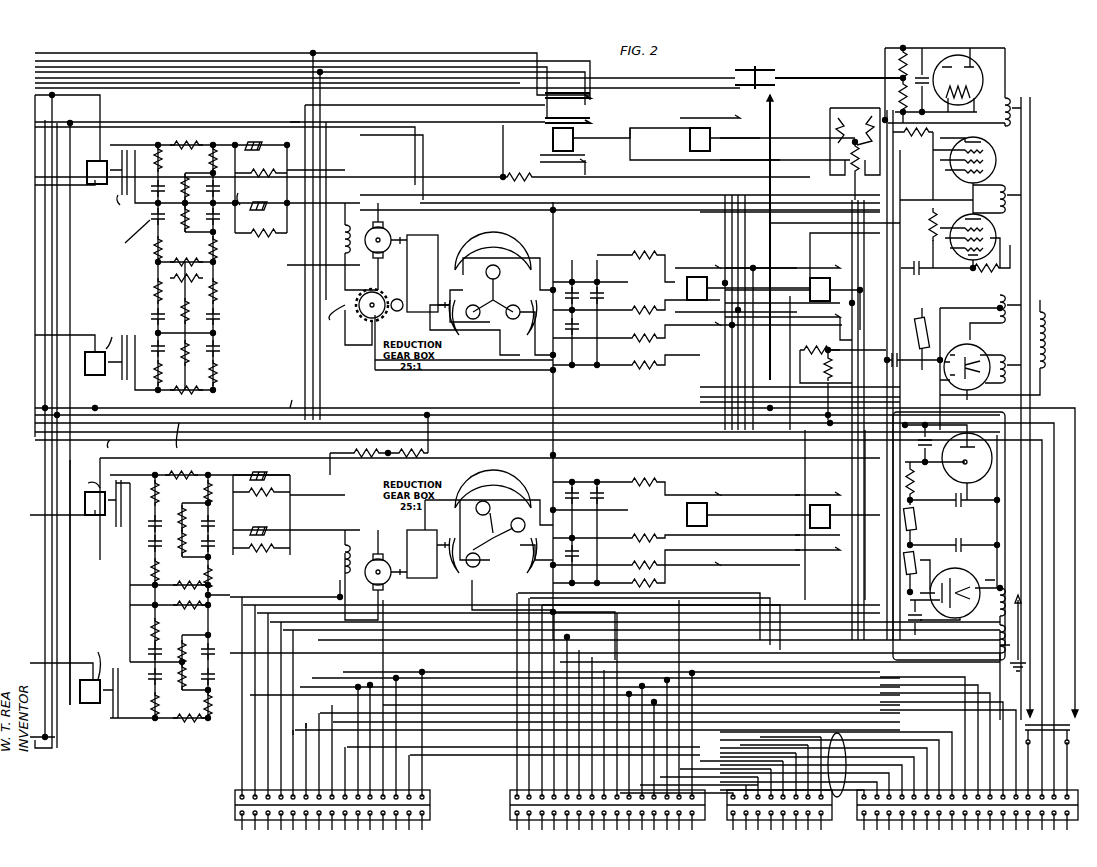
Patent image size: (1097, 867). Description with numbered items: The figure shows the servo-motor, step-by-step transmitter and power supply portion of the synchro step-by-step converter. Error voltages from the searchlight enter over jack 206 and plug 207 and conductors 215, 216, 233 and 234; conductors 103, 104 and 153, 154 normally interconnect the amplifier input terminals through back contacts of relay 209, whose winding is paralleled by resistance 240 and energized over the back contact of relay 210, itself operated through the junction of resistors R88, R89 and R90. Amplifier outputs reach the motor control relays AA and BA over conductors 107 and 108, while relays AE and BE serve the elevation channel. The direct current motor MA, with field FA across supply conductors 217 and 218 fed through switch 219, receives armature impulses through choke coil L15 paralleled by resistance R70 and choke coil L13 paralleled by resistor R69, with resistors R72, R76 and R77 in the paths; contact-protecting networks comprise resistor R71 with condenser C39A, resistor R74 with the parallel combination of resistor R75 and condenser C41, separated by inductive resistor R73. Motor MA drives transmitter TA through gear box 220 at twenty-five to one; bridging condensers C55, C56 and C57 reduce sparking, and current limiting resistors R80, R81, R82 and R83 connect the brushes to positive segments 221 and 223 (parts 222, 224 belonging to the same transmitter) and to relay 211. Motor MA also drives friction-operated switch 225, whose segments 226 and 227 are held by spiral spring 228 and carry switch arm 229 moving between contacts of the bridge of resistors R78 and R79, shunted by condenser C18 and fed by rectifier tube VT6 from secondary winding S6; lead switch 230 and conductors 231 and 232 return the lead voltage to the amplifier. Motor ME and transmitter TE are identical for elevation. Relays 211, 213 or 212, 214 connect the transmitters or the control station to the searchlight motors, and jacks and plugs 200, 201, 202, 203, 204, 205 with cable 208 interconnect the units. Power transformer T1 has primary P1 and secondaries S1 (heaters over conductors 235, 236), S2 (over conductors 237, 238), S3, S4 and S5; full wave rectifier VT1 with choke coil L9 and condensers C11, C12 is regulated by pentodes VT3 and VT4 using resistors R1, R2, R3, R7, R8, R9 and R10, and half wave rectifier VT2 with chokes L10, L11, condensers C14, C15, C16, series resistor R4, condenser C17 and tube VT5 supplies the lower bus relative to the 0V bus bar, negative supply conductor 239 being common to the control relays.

The conductor 103 is at (71, 53).
The conductor 104 is at (119, 58).
The conductor 154 is at (177, 65).
The conductor 153 is at (239, 70).
The conductor 107 is at (98, 205).
The conductor 108 is at (77, 334).
The jack 200 is at (724, 800).
The plug 201 is at (725, 792).
The jack 202 is at (862, 815).
The plug 203 is at (850, 795).
The plug 204 is at (238, 796).
The jack 205 is at (238, 814).
The jack 206 is at (512, 810).
The plug 207 is at (512, 796).
The cable 208 is at (834, 748).
The relay 209 is at (575, 140).
The relay 210 is at (690, 140).
The relay 211 is at (694, 277).
The relay 212 is at (822, 275).
The relay 213 is at (687, 502).
The relay 214 is at (819, 505).
The conductor 215 is at (490, 670).
The conductor 216 is at (434, 680).
The supply conductor 217 is at (424, 396).
The supply conductor 218 is at (460, 396).
The switch 219 is at (1024, 728).
The gear box 220 is at (430, 226).
The positive potential segment 221 is at (510, 343).
The resolver rotor 222 is at (505, 270).
The positive potential segment 223 is at (450, 280).
The resolver winding 224 is at (440, 322).
The friction-operated switch 225 is at (396, 298).
The semicircular segment 226 is at (367, 294).
The semicircular segment 227 is at (387, 313).
The spiral spring 228 is at (340, 300).
The switch arm 229 is at (362, 318).
The azimuth lead switch 230 is at (765, 62).
The conductor 231 is at (628, 80).
The conductor 232 is at (678, 80).
The conductor 233 is at (343, 672).
The conductor 234 is at (318, 698).
The conductor 235 is at (805, 435).
The conductor 236 is at (865, 440).
The conductor 237 is at (420, 150).
The conductor 238 is at (425, 168).
The negative power supply conductor 239 is at (553, 468).
The resistance 240 is at (509, 179).
The screen grid resistor R1 is at (980, 275).
The grid resistor R2 is at (924, 238).
The resistance R3 is at (945, 130).
The series resistor R4 is at (905, 482).
The resistor R7 is at (826, 375).
The resistor R8 is at (820, 352).
The resistor R9 is at (358, 458).
The resistor R10 is at (416, 458).
The resistor R69 is at (261, 166).
The resistance R70 is at (259, 240).
The resistor R71 is at (158, 145).
The resistor R72 is at (175, 258).
The inductive resistor R73 is at (205, 133).
The resistor R74 is at (215, 148).
The resistor R75 is at (180, 183).
The resistor R76 is at (185, 327).
The resistor R77 is at (186, 380).
The resistor R78 is at (898, 60).
The resistor R79 is at (898, 92).
The current limiting resistor R80 is at (645, 252).
The current limiting resistor R81 is at (647, 309).
The current limiting resistor R82 is at (643, 342).
The current limiting resistor R83 is at (665, 365).
The resistor R88 is at (835, 124).
The resistor R89 is at (862, 125).
The resistor R90 is at (852, 170).
The condenser C11 is at (892, 369).
The condenser C12 is at (918, 268).
The condenser C14 is at (915, 624).
The condenser C15 is at (953, 542).
The condenser C16 is at (962, 503).
The condenser C17 is at (918, 446).
The condenser C18 is at (924, 63).
The condenser C39A is at (117, 240).
The condenser C41 is at (248, 196).
The bridging condenser C55 is at (606, 282).
The bridging condenser C56 is at (570, 266).
The bridging condenser C57 is at (585, 325).
The series choke coil L9 is at (935, 318).
The series choke coil L10 is at (918, 552).
The series choke coil L11 is at (918, 517).
The choke coil L13 is at (262, 145).
The choke coil L15 is at (261, 231).
The full wave rectifier tube VT1 is at (975, 350).
The half wave rectifier tube VT2 is at (940, 620).
The pentode tube VT3 is at (996, 232).
The amplifier pentode tube VT4 is at (993, 152).
The power supply tube VT5 is at (953, 475).
The lead voltage rectifier tube VT6 is at (985, 70).
The secondary winding S1 is at (998, 657).
The secondary winding S2 is at (1023, 200).
The secondary winding S3 is at (992, 386).
The secondary winding S4 is at (998, 300).
The secondary winding S5 is at (993, 622).
The secondary winding S6 is at (1022, 95).
The primary winding P1 is at (1041, 310).
The power transformer T1 is at (1032, 262).
The azimuth servo-motor MA is at (378, 233).
The elevation servo-motor ME is at (368, 564).
The azimuth transmitter TA is at (492, 281).
The elevation transmitter TE is at (492, 514).
The motor field FA is at (361, 246).
The motor control relay AA is at (109, 213).
The motor control relay BA is at (109, 331).
The motor control relay AE is at (97, 500).
The motor control relay BE is at (99, 675).
The 0-V bus bar 0V is at (120, 449).